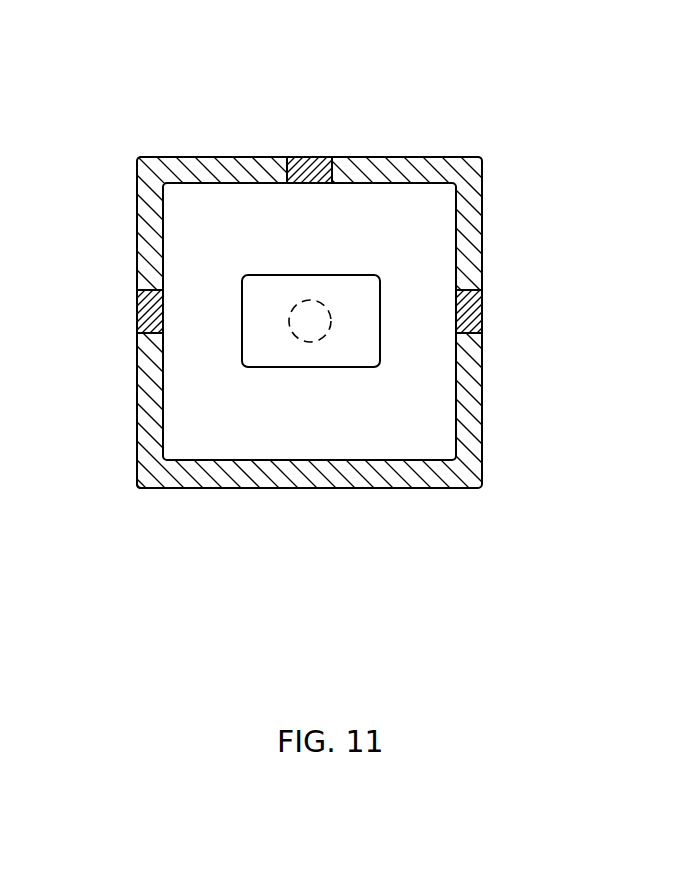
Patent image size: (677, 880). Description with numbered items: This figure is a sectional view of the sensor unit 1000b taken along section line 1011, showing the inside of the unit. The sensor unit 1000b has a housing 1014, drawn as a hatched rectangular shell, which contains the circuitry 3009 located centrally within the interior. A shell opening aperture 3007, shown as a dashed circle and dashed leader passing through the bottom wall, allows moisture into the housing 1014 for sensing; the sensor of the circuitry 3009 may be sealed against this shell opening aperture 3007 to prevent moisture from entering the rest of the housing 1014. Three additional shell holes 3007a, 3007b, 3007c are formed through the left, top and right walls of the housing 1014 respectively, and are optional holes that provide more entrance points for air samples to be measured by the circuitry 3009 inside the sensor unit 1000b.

The housing assembly 1011 is at (25, 63).
The housing 1014 is at (482, 425).
The sensor unit 1000b is at (140, 493).
The shell opening aperture 3007 is at (310, 343).
The shell hole 3007a is at (137, 308).
The shell hole 3007b is at (300, 156).
The shell hole 3007c is at (465, 307).
The circuitry 3009 is at (350, 360).